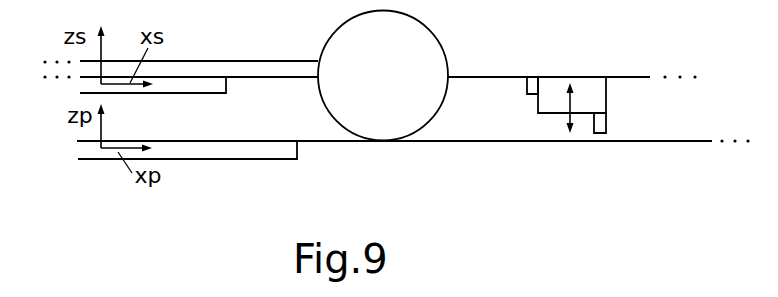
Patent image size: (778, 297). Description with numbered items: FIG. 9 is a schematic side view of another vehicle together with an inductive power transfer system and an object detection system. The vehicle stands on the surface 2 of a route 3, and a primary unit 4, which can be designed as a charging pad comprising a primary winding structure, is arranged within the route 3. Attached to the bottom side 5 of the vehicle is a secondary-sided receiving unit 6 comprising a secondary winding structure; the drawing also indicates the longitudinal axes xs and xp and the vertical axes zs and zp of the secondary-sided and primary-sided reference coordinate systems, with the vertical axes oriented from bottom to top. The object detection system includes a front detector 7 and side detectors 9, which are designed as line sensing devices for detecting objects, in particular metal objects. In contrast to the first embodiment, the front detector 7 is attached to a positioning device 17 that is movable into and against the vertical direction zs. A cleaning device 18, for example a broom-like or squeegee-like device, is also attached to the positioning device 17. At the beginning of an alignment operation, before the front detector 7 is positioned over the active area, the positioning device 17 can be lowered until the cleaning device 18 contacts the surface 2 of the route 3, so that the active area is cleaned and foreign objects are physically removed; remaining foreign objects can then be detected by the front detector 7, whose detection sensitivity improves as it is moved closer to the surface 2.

The surface 2 is at (688, 140).
The route 3 is at (650, 190).
The primary unit 4 is at (267, 152).
The bottom side 5 is at (182, 62).
The secondary-sided receiving unit 6 is at (210, 85).
The front detector 7 is at (533, 82).
The side detector 9 is at (197, 72).
The positioning device 17 is at (585, 85).
The cleaning device 18 is at (598, 119).